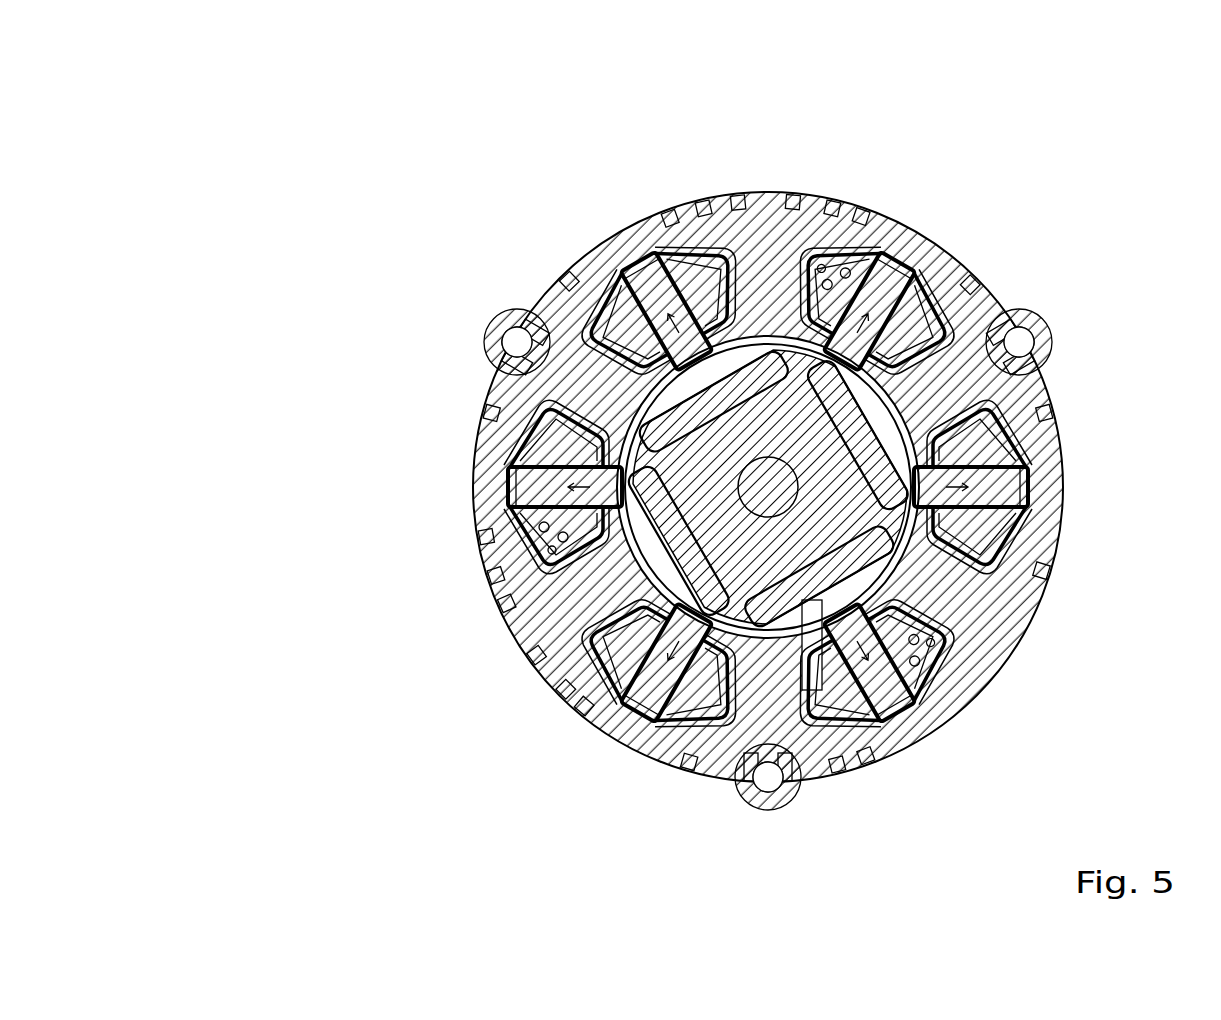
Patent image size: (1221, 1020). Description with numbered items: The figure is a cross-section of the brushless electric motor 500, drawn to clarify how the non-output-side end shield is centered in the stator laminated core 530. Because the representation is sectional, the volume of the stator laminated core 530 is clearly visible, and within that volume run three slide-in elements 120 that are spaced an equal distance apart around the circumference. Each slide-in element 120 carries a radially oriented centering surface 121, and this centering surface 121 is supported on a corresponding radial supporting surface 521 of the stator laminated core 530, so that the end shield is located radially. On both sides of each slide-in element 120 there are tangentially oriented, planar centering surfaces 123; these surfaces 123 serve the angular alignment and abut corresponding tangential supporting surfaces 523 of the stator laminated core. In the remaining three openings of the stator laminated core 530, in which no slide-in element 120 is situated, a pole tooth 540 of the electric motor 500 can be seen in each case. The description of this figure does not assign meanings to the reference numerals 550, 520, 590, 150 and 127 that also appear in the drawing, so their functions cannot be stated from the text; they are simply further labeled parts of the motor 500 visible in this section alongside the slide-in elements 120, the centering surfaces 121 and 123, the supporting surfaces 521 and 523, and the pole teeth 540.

The electric motor 500 is at (276, 215).
The stator laminated core 530 is at (760, 250).
The housing outer wall 550 is at (940, 250).
The tangentially oriented planar centering surface 123 is at (600, 590).
The stator pole tooth 520 is at (610, 660).
The radial supporting surface 521 is at (690, 685).
The insulator 590 is at (580, 655).
The tangential supporting surface 523 is at (580, 560).
The pole tooth 540 is at (530, 465).
The slide-in element 120 is at (655, 700).
The radially oriented centering surface 121 is at (635, 695).
The mounting tab 150 is at (1035, 330).
The mounting hole 127 is at (780, 790).